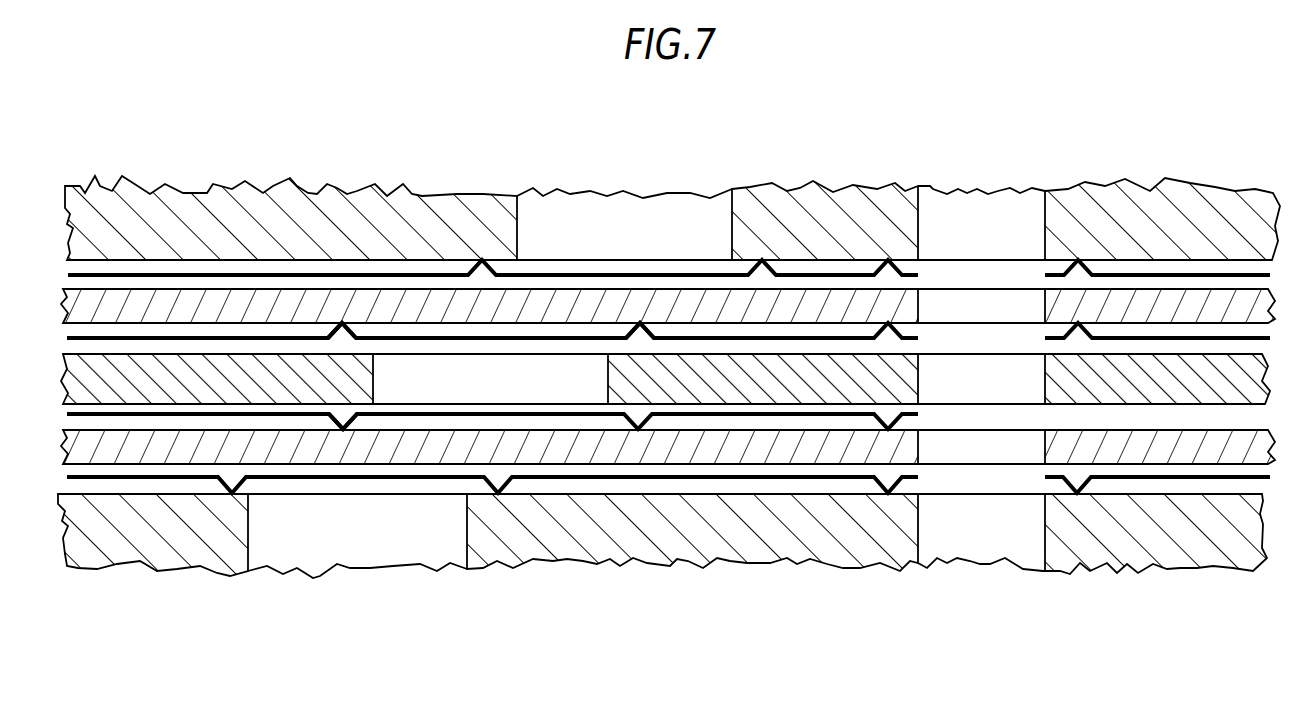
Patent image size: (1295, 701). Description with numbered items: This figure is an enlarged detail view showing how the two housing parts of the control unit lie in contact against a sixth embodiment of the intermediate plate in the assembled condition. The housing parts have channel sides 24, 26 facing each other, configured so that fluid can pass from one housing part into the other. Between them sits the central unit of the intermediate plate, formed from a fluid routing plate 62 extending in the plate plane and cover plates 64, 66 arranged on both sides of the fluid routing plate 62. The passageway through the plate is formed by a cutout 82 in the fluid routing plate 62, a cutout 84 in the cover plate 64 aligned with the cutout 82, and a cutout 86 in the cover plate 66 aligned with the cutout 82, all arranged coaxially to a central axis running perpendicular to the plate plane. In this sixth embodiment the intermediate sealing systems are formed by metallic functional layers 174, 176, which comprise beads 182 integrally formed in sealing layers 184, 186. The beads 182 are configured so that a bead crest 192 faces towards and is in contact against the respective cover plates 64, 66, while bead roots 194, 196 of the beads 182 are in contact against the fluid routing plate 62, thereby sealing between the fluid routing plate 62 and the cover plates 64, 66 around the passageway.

The channel side 24 is at (848, 263).
The channel side 26 is at (840, 491).
The fluid routing plate 62 is at (731, 392).
The cover plate 64 is at (147, 305).
The cover plate 66 is at (165, 446).
The cutout 82 is at (967, 392).
The cutout 84 is at (983, 307).
The cutout 86 is at (983, 447).
The functional layer 174 is at (223, 337).
The functional layer 176 is at (258, 413).
The bead 182 is at (353, 337).
The sealing layer 184 is at (328, 336).
The sealing layer 186 is at (310, 413).
The bead crest 192 is at (342, 322).
The bead root 194 is at (315, 335).
The bead root 196 is at (362, 337).